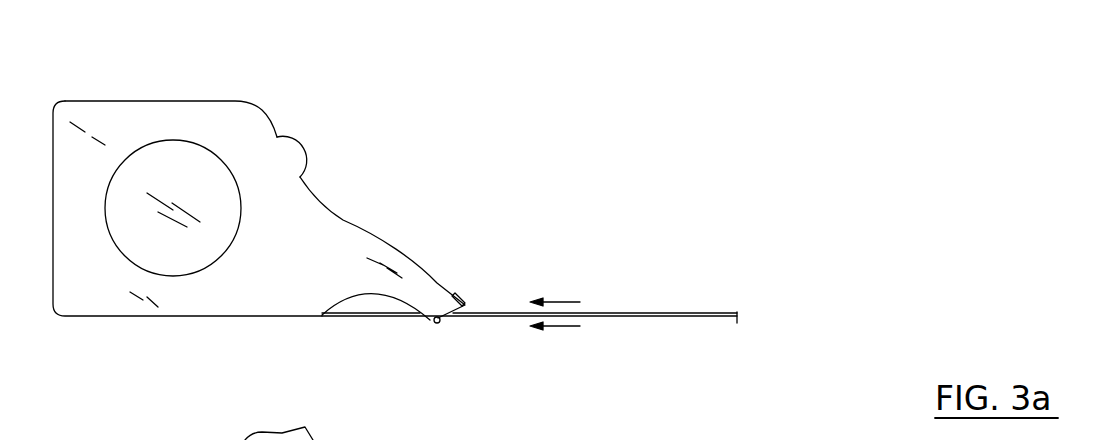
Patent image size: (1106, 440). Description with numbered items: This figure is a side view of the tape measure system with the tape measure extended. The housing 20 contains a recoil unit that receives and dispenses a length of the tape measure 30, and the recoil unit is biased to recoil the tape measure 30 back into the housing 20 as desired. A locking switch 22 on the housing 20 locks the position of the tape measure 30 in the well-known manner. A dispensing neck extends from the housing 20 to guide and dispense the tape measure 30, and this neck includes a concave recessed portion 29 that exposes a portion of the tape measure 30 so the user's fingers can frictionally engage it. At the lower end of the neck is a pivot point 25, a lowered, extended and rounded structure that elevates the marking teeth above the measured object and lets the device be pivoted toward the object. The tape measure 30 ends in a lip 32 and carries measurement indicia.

The housing 20 is at (158, 95).
The locking switch 22 is at (297, 147).
The pivot point 25 is at (437, 323).
The recessed portion 29 is at (373, 295).
The tape measure 30 is at (647, 312).
The lip 32 is at (738, 317).